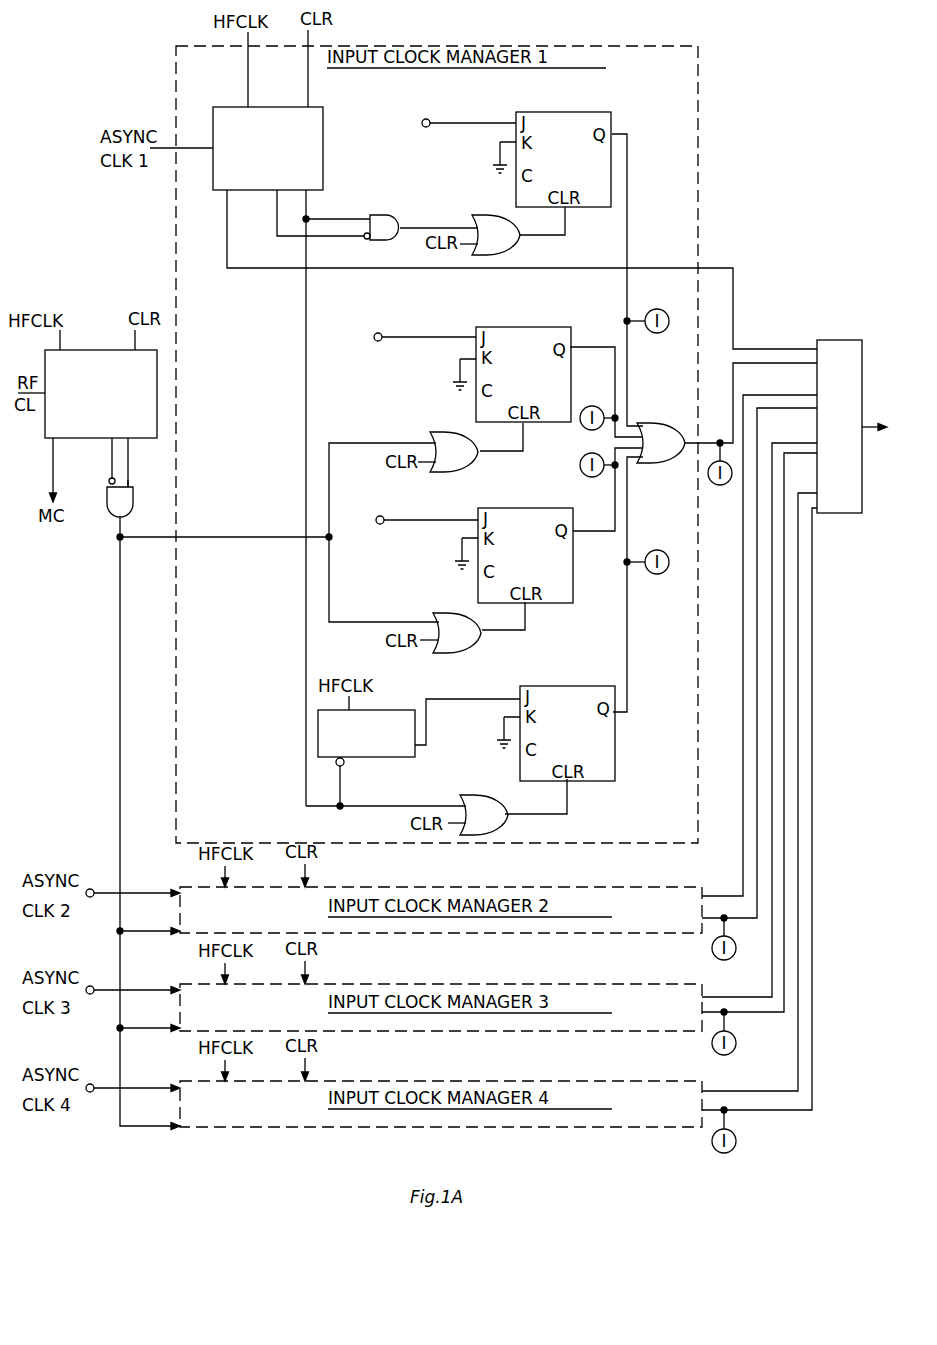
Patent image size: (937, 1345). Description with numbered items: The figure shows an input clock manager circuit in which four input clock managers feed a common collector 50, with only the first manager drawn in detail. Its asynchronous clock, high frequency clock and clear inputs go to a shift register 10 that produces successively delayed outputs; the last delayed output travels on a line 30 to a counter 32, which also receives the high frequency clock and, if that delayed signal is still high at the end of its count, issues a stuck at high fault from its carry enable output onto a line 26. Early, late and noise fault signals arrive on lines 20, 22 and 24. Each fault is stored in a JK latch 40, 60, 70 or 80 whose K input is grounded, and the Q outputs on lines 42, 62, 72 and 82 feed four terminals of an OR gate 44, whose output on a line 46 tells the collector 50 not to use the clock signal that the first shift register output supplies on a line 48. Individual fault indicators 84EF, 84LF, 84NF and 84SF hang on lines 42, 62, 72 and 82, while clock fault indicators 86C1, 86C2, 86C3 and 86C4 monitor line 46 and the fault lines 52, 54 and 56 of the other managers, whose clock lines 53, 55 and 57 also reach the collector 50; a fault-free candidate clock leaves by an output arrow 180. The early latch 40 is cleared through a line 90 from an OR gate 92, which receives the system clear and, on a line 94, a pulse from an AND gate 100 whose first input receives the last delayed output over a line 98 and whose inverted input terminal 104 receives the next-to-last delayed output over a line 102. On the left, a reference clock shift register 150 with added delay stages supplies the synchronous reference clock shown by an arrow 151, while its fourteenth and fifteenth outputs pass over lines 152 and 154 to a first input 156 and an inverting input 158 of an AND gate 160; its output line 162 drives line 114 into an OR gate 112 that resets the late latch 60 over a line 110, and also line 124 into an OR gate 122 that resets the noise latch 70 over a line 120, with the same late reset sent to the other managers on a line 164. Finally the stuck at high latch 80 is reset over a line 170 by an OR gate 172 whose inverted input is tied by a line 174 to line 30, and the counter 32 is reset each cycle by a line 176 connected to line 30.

The shift register 10 is at (277, 106).
The early fault line 20 is at (427, 128).
The late fault line 22 is at (380, 341).
The noise fault line 24 is at (378, 516).
The stuck at high fault line 26 is at (428, 742).
The Qn line 30 is at (306, 284).
The counter 32 is at (402, 710).
The latch 40 is at (555, 112).
The Q output line 42 is at (628, 196).
The OR gate 44 is at (661, 443).
The output line 46 is at (734, 372).
The clock signal line 48 is at (765, 349).
The collector 50 is at (838, 340).
The fault signal line 52 is at (763, 409).
The clock signal line 53 is at (789, 398).
The fault signal line 54 is at (788, 452).
The clock signal line 55 is at (794, 450).
The fault signal line 56 is at (816, 511).
The clock signal line 57 is at (800, 490).
The latch 60 is at (516, 327).
The Q output line 62 is at (586, 336).
The latch 70 is at (519, 508).
The Q output line 72 is at (592, 544).
The latch 80 is at (562, 686).
The Q output line 82 is at (628, 672).
The early fault indicator 84EF is at (655, 309).
The late fault indicator 84LF is at (590, 398).
The noise fault indicator 84NF is at (592, 477).
The stuck at high fault indicator 84SF is at (654, 578).
The clock fault indicator 86C1 is at (718, 486).
The clock fault indicator 86C2 is at (736, 950).
The clock fault indicator 86C3 is at (736, 1045).
The clock fault indicator 86C4 is at (736, 1143).
The reset line 90 is at (565, 225).
The OR gate 92 is at (496, 235).
The AND gate output line 94 is at (425, 228).
The Qn input line 98 is at (340, 217).
The AND gate 100 is at (382, 215).
The Qn-1 input line 102 is at (274, 229).
The inverted input terminal 104 is at (364, 239).
The reset line 110 is at (532, 434).
The OR gate 112 is at (454, 452).
The upper input line 114 is at (359, 443).
The reset line 120 is at (532, 616).
The OR gate 122 is at (457, 633).
The input line 124 is at (358, 622).
The shift register 150 is at (102, 350).
The arrow 151 is at (50, 467).
The Q14 output line 152 is at (130, 449).
The Q15 output line 154 is at (110, 458).
The first input 156 is at (131, 482).
The inverting input 158 is at (109, 484).
The AND gate 160 is at (106, 520).
The AND gate output line 162 is at (202, 537).
The late reset line 164 is at (120, 626).
The reset line 170 is at (567, 802).
The OR gate 172 is at (484, 815).
The input line 174 is at (421, 806).
The counter reset line 176 is at (340, 786).
The output arrow 180 is at (870, 424).